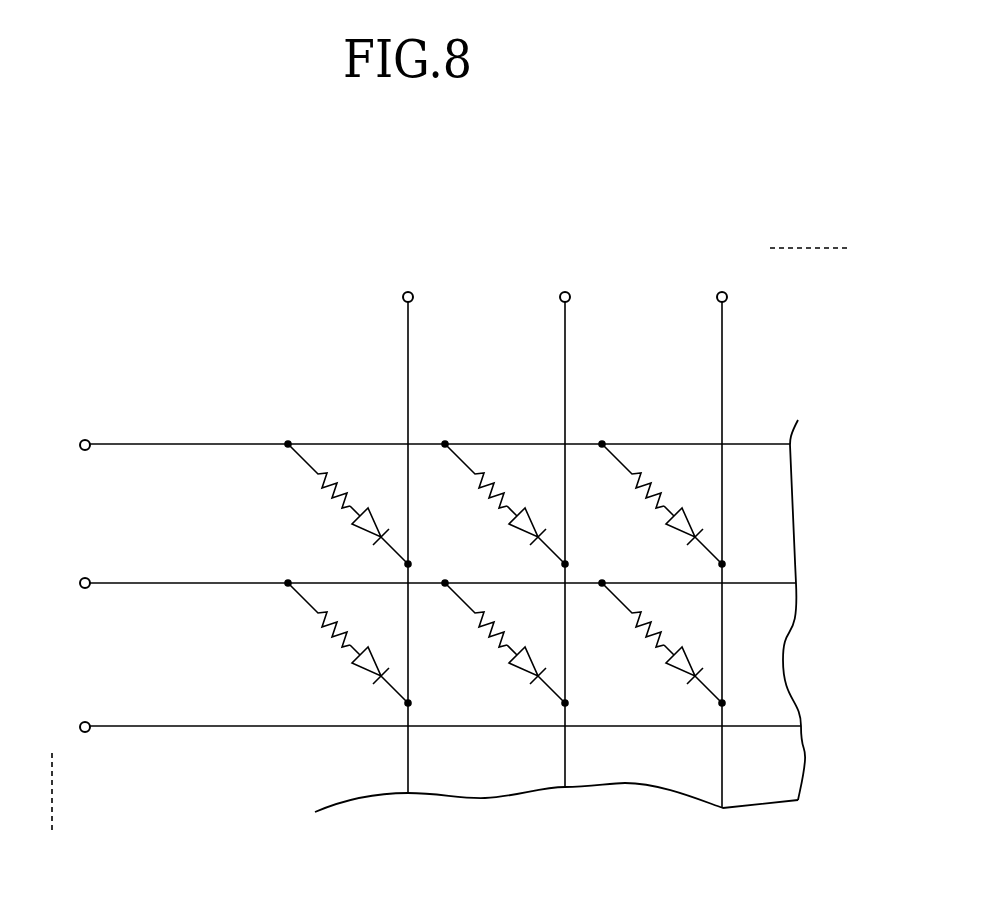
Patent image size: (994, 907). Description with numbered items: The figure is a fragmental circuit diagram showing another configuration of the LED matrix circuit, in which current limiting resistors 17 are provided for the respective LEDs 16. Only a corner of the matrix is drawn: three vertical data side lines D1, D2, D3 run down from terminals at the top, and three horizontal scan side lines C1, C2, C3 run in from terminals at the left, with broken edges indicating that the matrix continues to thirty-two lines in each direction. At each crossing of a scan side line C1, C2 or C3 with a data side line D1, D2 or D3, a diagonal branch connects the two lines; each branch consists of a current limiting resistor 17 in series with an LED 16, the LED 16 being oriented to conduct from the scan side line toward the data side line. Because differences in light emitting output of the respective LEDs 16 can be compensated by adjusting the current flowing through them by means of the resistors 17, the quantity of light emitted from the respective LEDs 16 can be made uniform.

The LED 16 is at (511, 606).
The current limiting resistor 17 is at (462, 544).
The data side row line D1 is at (406, 517).
The data side row line D2 is at (561, 514).
The data side row line D3 is at (719, 525).
The scan side column line C1 is at (412, 446).
The scan side column line C2 is at (415, 585).
The scan side column line C3 is at (418, 728).